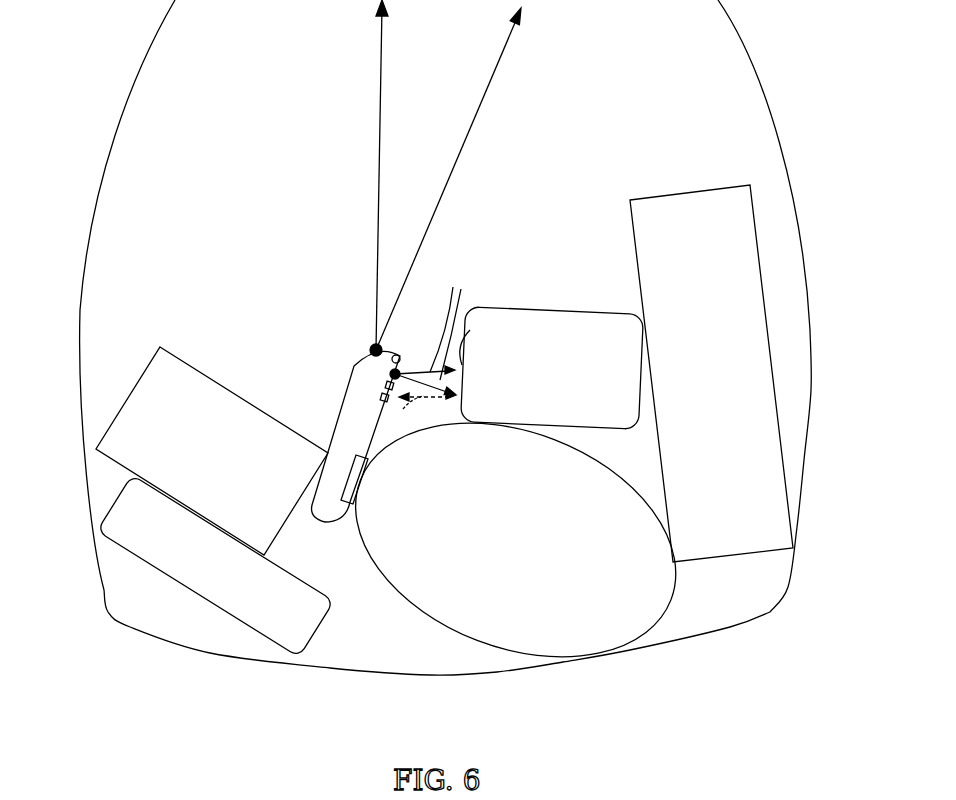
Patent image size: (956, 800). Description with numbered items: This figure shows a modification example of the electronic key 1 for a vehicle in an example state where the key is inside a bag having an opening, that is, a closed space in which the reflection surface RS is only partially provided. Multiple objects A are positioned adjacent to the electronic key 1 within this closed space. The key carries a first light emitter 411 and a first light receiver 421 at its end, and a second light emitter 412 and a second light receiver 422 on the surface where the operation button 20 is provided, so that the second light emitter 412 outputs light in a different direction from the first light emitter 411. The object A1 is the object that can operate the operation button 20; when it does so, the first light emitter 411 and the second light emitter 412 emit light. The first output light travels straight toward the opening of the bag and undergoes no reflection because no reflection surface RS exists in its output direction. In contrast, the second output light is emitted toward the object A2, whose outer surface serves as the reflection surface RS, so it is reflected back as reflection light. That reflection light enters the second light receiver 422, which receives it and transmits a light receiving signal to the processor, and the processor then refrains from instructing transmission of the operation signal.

The electronic key 1 is at (351, 462).
The operation button 20 is at (346, 425).
The first light emitter 411 is at (366, 350).
The first light receiver 421 is at (357, 360).
The second light emitter 412 is at (390, 373).
The second light receiver 422 is at (384, 397).
The object A is at (108, 503).
The object that operates the operation button A1 is at (653, 628).
The object disposed in the output direction of the second output light A2 is at (583, 310).
The reflection surface RS is at (470, 333).